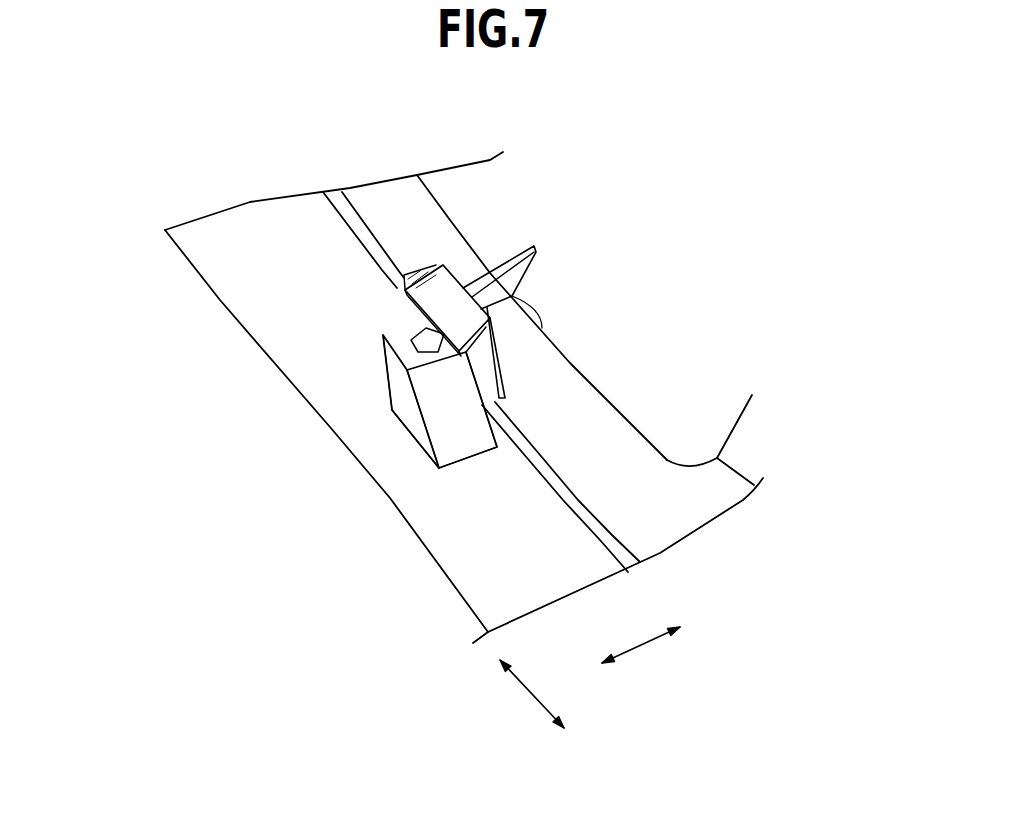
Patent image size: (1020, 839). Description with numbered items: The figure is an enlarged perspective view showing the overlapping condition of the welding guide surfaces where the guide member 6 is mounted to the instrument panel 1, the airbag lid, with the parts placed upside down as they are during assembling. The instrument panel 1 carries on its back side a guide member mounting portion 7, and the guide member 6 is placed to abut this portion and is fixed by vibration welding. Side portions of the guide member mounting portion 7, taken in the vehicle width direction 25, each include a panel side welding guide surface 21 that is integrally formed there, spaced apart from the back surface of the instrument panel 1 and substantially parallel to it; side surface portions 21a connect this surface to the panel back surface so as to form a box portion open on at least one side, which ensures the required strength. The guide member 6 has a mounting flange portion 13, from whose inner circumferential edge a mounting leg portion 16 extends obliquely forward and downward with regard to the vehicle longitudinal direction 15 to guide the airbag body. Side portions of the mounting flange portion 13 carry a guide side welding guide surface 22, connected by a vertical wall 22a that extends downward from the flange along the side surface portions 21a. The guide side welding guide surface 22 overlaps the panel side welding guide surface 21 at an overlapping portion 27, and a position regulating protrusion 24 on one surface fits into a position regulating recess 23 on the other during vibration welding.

The instrument panel 1 is at (166, 274).
The guide member 6 is at (351, 241).
The guide member mounting portion 7 is at (715, 546).
The mounting flange portion 13 is at (685, 510).
The vehicle longitudinal direction 15 is at (532, 690).
The mounting leg portion 16 is at (748, 442).
The panel side welding guide surface 21 is at (383, 336).
The side surface portions 21a is at (452, 428).
The guide side welding guide surface 22 is at (404, 292).
The vertical wall 22a is at (498, 360).
The position regulating recess 23 is at (413, 340).
The position regulating protrusion 24 is at (405, 385).
The vehicle width direction 25 is at (640, 645).
The overlapping portion 27 is at (413, 256).